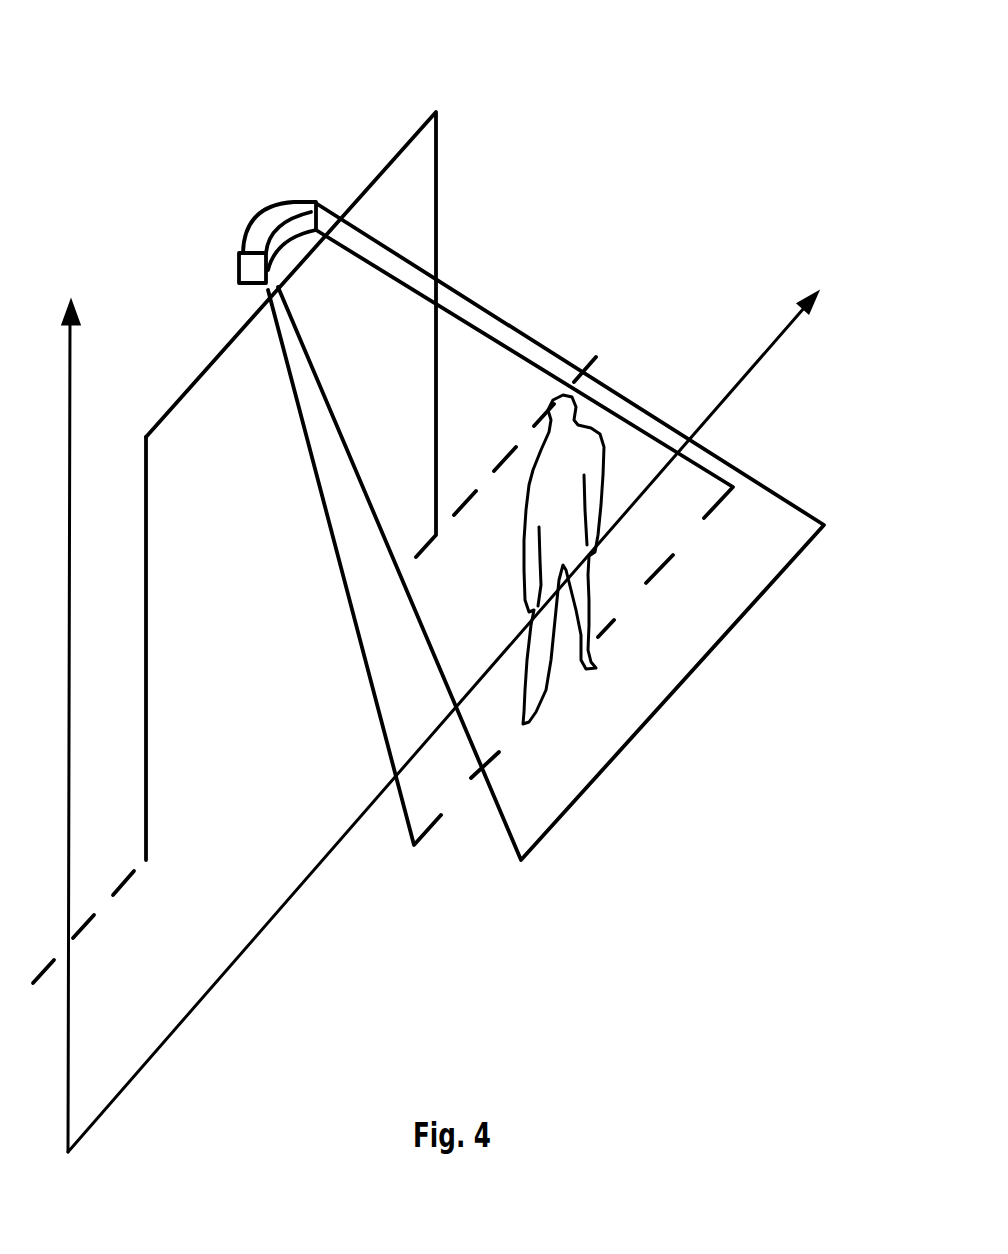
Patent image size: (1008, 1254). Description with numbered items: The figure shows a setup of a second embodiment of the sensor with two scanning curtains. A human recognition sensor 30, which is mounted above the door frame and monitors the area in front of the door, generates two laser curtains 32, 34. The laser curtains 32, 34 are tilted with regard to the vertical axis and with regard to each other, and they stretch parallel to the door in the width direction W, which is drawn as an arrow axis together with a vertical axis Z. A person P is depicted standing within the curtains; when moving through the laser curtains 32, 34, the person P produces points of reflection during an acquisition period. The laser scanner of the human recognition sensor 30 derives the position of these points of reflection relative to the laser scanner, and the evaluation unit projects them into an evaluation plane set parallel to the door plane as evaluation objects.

The human recognition sensor 30 is at (238, 251).
The laser curtain 32 is at (776, 510).
The laser curtain 34 is at (485, 335).
The person P is at (577, 572).
The Z axis Z is at (55, 716).
The width direction W is at (469, 691).